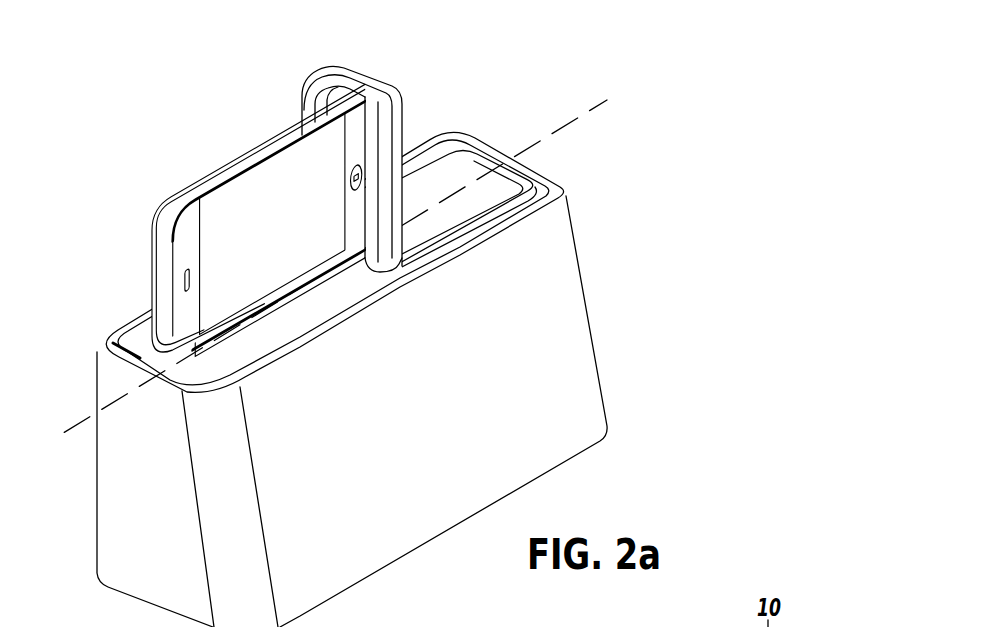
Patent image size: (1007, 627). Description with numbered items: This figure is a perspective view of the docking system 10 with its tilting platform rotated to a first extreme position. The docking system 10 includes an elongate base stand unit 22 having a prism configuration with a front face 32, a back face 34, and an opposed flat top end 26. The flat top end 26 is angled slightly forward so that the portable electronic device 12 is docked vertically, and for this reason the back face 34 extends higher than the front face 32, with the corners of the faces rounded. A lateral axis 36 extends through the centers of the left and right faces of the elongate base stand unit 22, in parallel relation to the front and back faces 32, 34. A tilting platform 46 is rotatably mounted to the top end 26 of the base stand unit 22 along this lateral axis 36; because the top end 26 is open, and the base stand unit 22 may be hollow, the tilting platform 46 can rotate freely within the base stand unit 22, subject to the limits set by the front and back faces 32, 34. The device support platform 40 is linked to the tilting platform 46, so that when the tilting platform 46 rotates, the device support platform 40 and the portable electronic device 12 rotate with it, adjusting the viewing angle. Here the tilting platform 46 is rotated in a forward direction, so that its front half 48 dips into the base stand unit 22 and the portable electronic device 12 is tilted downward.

The docking system 10 is at (341, 313).
The portable electronic device 12 is at (217, 172).
The elongate base stand unit 22 is at (341, 346).
The flat top end 26 is at (94, 335).
The front face 32 is at (523, 447).
The back face 34 is at (97, 529).
The lateral axis 36 is at (550, 133).
The device support platform 40 is at (356, 72).
The tilting platform 46 is at (443, 131).
The front half 48 is at (506, 206).